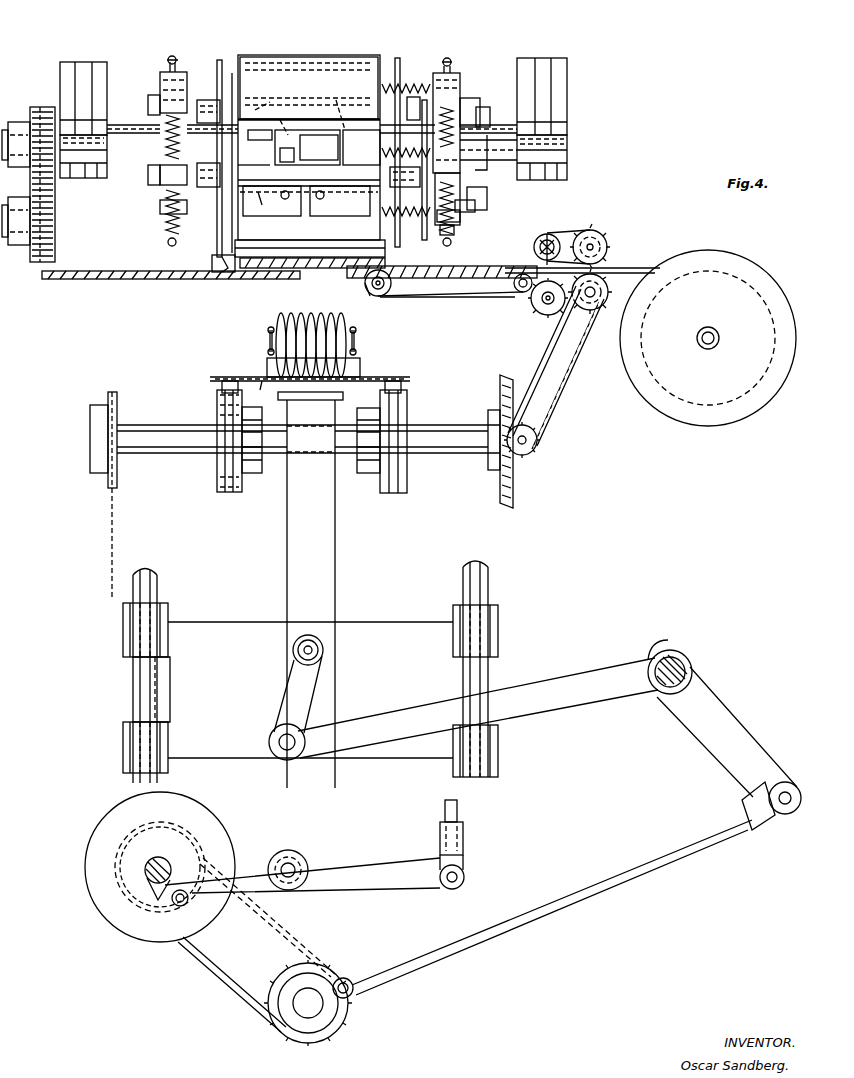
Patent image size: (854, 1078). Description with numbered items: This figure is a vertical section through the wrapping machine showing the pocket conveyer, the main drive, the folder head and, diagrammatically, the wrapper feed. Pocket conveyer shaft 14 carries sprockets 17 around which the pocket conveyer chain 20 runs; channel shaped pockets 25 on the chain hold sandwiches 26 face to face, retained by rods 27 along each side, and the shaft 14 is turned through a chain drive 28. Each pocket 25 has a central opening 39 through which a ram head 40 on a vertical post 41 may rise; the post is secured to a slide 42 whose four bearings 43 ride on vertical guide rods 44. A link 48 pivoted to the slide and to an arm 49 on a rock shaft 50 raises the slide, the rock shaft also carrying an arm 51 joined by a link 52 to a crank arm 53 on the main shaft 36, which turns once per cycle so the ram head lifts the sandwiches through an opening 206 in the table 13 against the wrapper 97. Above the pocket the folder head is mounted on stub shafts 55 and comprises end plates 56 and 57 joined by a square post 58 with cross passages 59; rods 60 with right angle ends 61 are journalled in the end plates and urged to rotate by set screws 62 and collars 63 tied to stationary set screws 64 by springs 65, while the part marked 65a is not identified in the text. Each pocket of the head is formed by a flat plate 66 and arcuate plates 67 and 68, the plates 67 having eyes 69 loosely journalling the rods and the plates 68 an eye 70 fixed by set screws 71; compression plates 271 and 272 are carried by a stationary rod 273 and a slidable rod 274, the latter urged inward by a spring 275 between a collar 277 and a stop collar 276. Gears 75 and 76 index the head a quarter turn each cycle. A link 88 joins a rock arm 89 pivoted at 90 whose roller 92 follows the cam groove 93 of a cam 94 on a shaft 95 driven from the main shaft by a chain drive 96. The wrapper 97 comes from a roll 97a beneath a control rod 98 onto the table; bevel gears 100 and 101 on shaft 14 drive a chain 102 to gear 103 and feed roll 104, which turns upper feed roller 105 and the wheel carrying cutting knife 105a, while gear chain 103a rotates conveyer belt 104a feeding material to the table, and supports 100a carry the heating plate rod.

The table 13 is at (152, 279).
The pocket conveyer shaft 14 is at (165, 453).
The sprocket 17 is at (393, 493).
The pocket conveyor chain 20 is at (405, 386).
The article-receiving pocket 25 is at (362, 368).
The sandwiches 26 is at (346, 318).
The rods 27 is at (356, 340).
The chain drive 28 is at (112, 508).
The main shaft 36 is at (310, 1010).
The central opening 39 is at (258, 389).
The ram head 40 is at (318, 386).
The vertical post 41 is at (322, 503).
The slide 42 is at (414, 620).
The bearings 43 is at (498, 748).
The vertical guide rods 44 is at (488, 585).
The link 48 is at (278, 698).
The arm 49 is at (405, 690).
The rock shaft 50 is at (680, 660).
The arm 51 is at (742, 733).
The link 52 is at (592, 885).
The crank arm 53 is at (355, 1000).
The stub shafts 55 is at (535, 133).
The end plate 56 is at (182, 72).
The end plate 57 is at (460, 73).
The square connecting post 58 is at (390, 110).
The cross passages 59 is at (300, 155).
The rod 60 is at (215, 258).
The right angle end 61 is at (485, 178).
The set screws 62 is at (460, 218).
The collar 63 is at (443, 173).
The stationary set screws 64 is at (452, 244).
The springs 65 is at (160, 225).
The bracket 65a is at (440, 230).
The flat plate 66 is at (322, 220).
The arcuate plate 67 is at (292, 205).
The arcuate plate 68 is at (362, 224).
The eyes 69 is at (245, 210).
The eye 70 is at (288, 220).
The set screws 71 is at (318, 140).
The gear 75 is at (42, 107).
The gear 76 is at (36, 262).
The link 88 is at (457, 805).
The rock arm 89 is at (378, 888).
The pivot 90 is at (290, 868).
The roller 92 is at (187, 905).
The cam groove 93 is at (170, 840).
The cam 94 is at (92, 863).
The shaft 95 is at (147, 882).
The chain drive 96 is at (315, 940).
The wrapper 97 is at (493, 266).
The roll 97a is at (745, 268).
The wrapper control rod 98 is at (283, 258).
The bevel gear 100 is at (533, 452).
The supports 100a is at (228, 268).
The bevel gear 101 is at (513, 490).
The chain 102 is at (566, 397).
The gear 103 is at (608, 292).
The gear chain 103a is at (540, 312).
The feed roll 104 is at (618, 269).
The conveyer belt 104a is at (460, 297).
The upper feed roller 105 is at (598, 233).
The cutting knife 105a is at (540, 236).
The opening 206 is at (270, 268).
The compression plate 271 is at (312, 142).
The compression plate 272 is at (343, 152).
The rod 273 is at (250, 133).
The rod 274 is at (400, 240).
The spring 275 is at (430, 240).
The stop collar 276 is at (470, 225).
The collar 277 is at (388, 240).